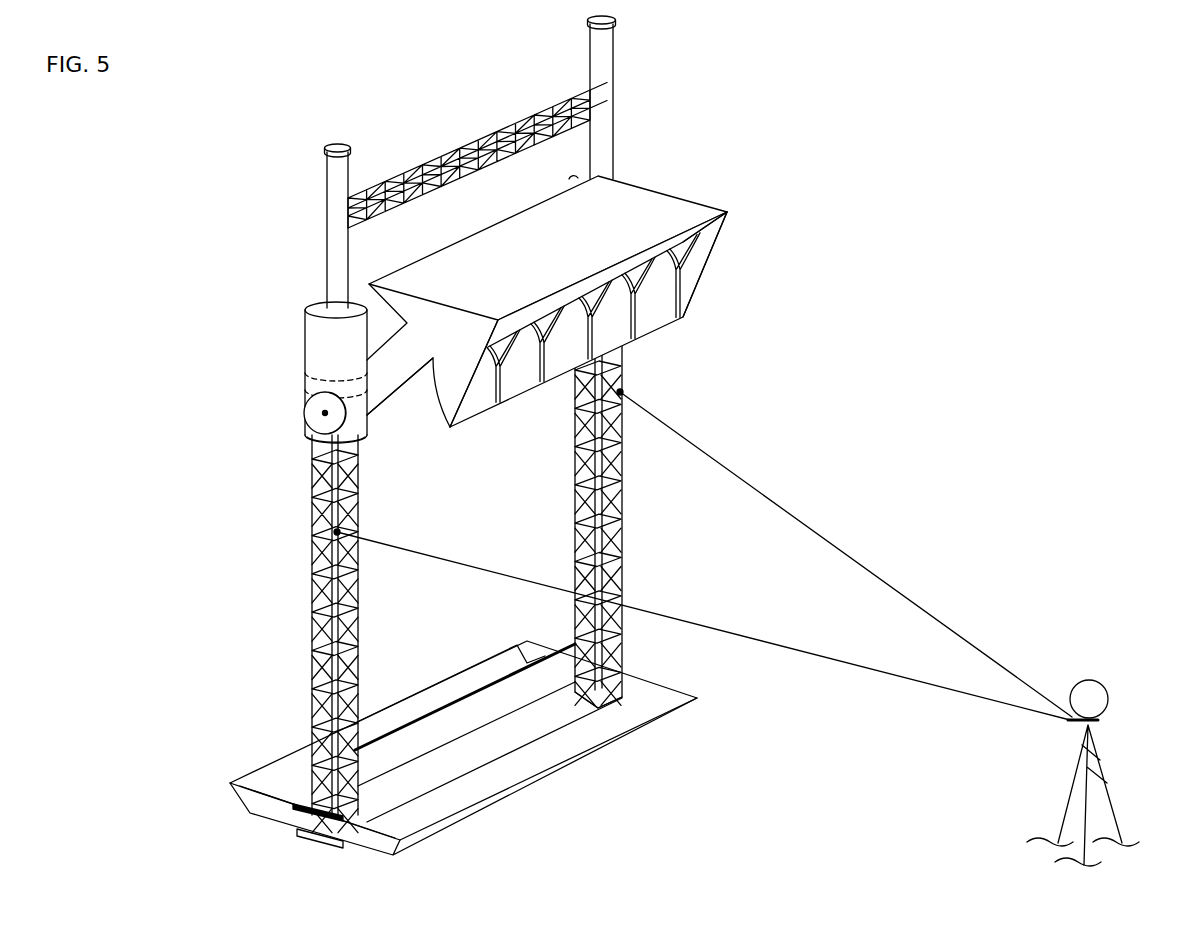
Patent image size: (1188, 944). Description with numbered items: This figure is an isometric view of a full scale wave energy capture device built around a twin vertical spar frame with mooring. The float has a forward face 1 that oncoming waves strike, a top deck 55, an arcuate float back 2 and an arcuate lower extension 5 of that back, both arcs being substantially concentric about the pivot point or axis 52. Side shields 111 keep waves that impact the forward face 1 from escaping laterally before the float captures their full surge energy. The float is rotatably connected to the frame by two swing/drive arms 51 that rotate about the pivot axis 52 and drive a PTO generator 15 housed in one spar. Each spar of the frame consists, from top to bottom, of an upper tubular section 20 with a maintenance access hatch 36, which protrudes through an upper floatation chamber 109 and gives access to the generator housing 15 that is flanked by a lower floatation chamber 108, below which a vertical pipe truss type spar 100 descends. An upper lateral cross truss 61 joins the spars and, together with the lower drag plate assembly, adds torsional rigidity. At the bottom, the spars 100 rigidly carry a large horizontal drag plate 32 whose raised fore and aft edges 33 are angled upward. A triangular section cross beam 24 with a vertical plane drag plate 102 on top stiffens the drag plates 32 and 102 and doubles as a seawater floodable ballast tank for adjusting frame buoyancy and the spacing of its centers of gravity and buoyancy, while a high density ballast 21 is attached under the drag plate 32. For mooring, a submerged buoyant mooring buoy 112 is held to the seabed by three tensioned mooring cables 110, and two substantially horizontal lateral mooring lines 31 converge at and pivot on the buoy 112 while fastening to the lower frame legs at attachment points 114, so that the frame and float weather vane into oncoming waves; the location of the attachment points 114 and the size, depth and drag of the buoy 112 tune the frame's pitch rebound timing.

The forward face 1 is at (687, 240).
The arcuate float back 2 is at (388, 303).
The arcuate lower extension 5 is at (657, 315).
The PTO generator 15 is at (304, 413).
The upper tubular section 20 is at (327, 250).
The ballast 21 is at (325, 843).
The triangular section cross beam 24 is at (428, 780).
The lateral mooring line 31 is at (858, 554).
The horizontal drag plate 32 is at (558, 752).
The raised fore and aft edges 33 is at (638, 732).
The maintenance access hatch 36 is at (337, 143).
The swing/drive arm 51 is at (385, 388).
The pivot point or axis 52 is at (323, 416).
The top deck 55 is at (684, 205).
The upper lateral cross truss 61 is at (463, 153).
The vertical pipe truss type spar 100 is at (312, 553).
The vertical plane drag plate 102 is at (566, 649).
The lower floatation chamber 108 is at (360, 441).
The upper floatation chamber 109 is at (305, 340).
The tensioned mooring cable 110 is at (1104, 781).
The side shield 111 is at (693, 283).
The mooring buoy 112 is at (1088, 680).
The attachment point 114 is at (340, 531).